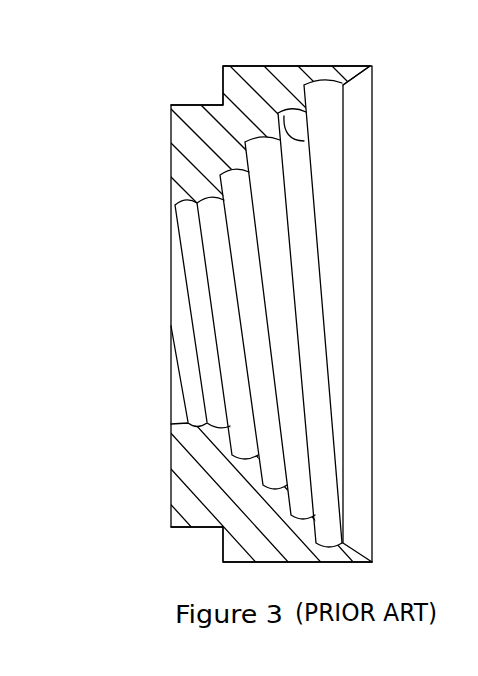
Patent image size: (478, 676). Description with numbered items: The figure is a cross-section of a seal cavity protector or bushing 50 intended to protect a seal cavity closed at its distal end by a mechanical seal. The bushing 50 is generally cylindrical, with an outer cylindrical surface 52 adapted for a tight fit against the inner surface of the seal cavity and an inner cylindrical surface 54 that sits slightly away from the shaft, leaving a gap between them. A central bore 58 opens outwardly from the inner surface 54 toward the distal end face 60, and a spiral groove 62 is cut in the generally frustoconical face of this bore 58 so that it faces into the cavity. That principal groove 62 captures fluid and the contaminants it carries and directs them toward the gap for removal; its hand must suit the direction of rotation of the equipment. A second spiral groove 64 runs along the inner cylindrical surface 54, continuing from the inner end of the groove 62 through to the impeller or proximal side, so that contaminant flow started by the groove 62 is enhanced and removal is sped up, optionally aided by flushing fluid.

The bushing 50 is at (337, 65).
The outer cylindrical surface 52 is at (283, 66).
The inner cylindrical surface 54 is at (176, 424).
The central bore 58 is at (332, 262).
The distal end face 60 is at (368, 67).
The spiral groove 62 is at (305, 140).
The spiral groove 64 is at (183, 205).